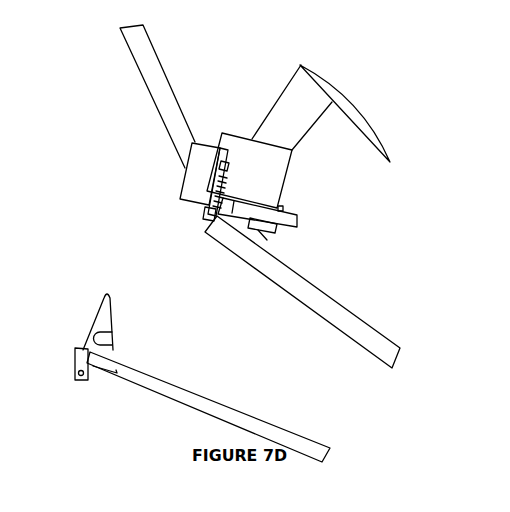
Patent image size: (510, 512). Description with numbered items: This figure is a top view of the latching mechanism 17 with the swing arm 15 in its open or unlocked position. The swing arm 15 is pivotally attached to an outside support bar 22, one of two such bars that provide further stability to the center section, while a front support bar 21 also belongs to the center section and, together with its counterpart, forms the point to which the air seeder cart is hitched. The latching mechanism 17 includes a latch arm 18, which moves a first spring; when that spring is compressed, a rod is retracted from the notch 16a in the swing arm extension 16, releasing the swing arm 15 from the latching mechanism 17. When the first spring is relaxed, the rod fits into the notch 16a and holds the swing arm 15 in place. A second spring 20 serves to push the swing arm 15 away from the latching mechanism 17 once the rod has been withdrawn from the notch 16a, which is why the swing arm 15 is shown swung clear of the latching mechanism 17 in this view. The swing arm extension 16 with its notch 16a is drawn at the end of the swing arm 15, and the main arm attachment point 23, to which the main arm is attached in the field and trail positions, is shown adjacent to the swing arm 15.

The swing arm 15 is at (208, 402).
The swing arm extension 16 is at (71, 316).
The notch 16a is at (153, 333).
The latching mechanism 17 is at (298, 136).
The latch arm 18 is at (291, 199).
The second spring 20 is at (162, 182).
The front support bar 21 is at (137, 96).
The outside support bar 22 is at (302, 292).
The main arm attachment point 23 is at (59, 384).